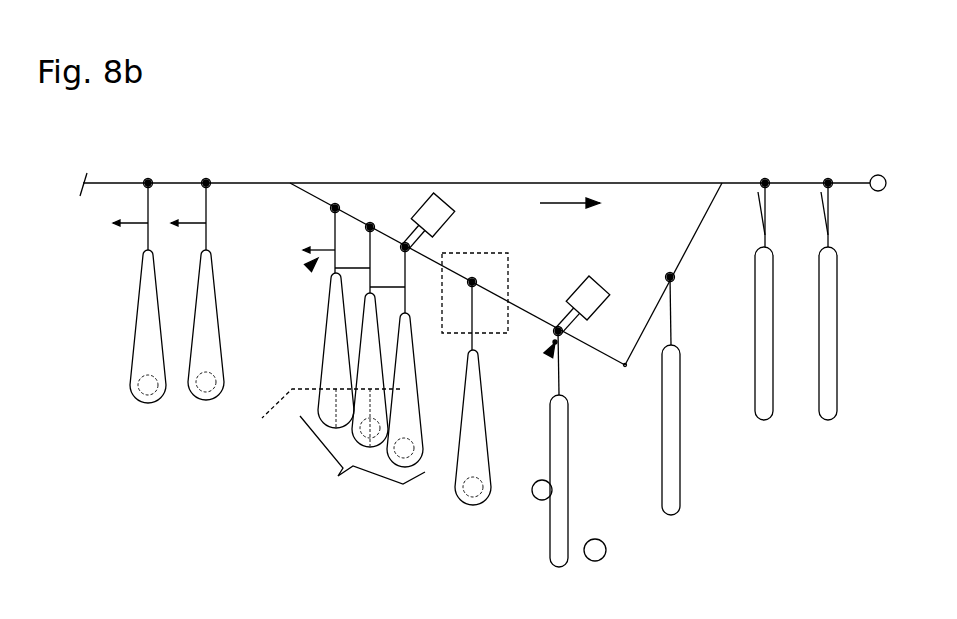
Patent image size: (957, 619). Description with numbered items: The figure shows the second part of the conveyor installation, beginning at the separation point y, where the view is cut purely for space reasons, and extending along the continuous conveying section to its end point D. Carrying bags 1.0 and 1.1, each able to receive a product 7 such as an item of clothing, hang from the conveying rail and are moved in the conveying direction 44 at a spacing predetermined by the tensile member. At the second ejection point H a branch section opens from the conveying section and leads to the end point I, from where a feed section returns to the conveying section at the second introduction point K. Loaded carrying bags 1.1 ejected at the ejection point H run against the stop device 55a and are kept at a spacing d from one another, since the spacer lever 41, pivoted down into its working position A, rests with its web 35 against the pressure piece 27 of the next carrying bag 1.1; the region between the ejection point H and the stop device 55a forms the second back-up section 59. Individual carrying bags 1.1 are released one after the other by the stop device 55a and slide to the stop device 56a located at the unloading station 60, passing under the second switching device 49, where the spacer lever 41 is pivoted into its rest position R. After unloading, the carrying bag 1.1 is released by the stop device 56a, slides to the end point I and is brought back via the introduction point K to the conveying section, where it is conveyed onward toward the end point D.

The separation point y is at (461, 185).
The second ejection point H is at (291, 182).
The second introduction point K is at (720, 182).
The end point I is at (624, 368).
The carrying bag 1.1 is at (146, 311).
The product 7 is at (142, 388).
The web 35 is at (341, 266).
The pressure piece 27 is at (397, 204).
The second back-up section 59 is at (362, 372).
The spacing d is at (324, 414).
The spacer lever 41 is at (300, 253).
The working position A is at (308, 268).
The stop device 55a is at (438, 210).
The second switching device 49 is at (487, 268).
The conveying direction 44 is at (563, 210).
The stop device 56a is at (598, 292).
The rest position R is at (548, 355).
The carrying bag 1.0 is at (672, 482).
The unloading station 60 is at (606, 553).
The end point of conveying section D is at (886, 186).